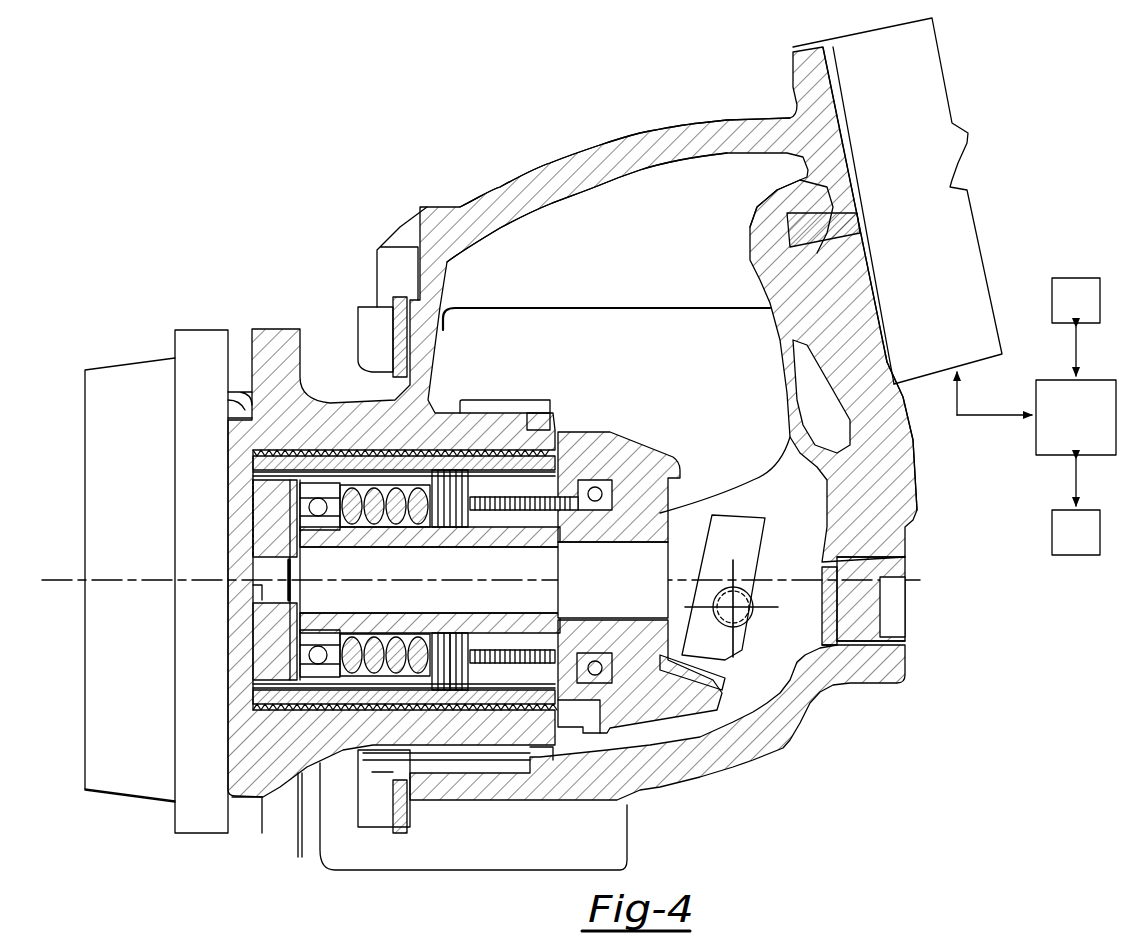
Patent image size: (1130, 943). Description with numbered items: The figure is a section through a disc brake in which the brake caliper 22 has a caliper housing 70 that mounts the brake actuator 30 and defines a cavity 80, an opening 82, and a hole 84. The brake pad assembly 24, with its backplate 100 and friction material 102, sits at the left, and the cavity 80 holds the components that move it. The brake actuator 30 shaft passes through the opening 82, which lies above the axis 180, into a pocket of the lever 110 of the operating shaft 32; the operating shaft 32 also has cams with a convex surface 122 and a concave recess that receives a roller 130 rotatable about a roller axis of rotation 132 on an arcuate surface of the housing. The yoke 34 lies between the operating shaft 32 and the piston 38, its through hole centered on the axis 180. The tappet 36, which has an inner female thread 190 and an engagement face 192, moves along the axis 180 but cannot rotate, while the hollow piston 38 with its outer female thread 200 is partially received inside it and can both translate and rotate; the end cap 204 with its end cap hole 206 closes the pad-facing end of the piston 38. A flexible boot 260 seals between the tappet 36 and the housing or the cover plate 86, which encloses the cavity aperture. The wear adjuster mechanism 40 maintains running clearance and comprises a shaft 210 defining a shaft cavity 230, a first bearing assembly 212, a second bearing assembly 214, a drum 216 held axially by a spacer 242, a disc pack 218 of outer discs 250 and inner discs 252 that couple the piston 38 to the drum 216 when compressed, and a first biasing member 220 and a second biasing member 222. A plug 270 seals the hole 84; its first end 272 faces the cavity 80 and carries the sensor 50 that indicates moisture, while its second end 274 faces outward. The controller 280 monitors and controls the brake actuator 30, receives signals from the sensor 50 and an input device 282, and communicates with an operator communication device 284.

The brake caliper 22 is at (618, 170).
The caliper housing 70 is at (608, 135).
The brake pad assembly 24 is at (142, 415).
The brake actuator 30 is at (927, 206).
The operating shaft 32 is at (838, 497).
The yoke 34 is at (648, 443).
The tappet 36 is at (270, 326).
The piston 38 is at (247, 461).
The wear adjuster mechanism 40 is at (560, 470).
The sensor 50 is at (822, 578).
The cavity 80 is at (634, 255).
The opening 82 is at (852, 297).
The hole 84 is at (895, 650).
The cover plate 86 is at (362, 310).
The backplate 100 is at (216, 745).
The friction material 102 is at (145, 745).
The lever 110 is at (750, 245).
The convex surface 122 is at (708, 480).
The roller 130 is at (760, 650).
The roller axis of rotation 132 is at (755, 607).
The axis 180 is at (74, 578).
The inner female thread 190 is at (484, 462).
The engagement face 192 is at (228, 436).
The outer female thread 200 is at (352, 450).
The end cap 204 is at (265, 510).
The end cap hole 206 is at (256, 591).
The shaft 210 is at (616, 539).
The first bearing assembly 212 is at (297, 652).
The second bearing assembly 214 is at (597, 645).
The drum 216 is at (520, 634).
The disc pack 218 is at (448, 698).
The first biasing member 220 is at (357, 662).
The second biasing member 222 is at (558, 677).
The shaft cavity 230 is at (305, 606).
The spacer 242 is at (413, 633).
The outer disc 250 is at (423, 682).
The inner disc 252 is at (453, 660).
The flexible boot 260 is at (462, 398).
The plug 270 is at (905, 612).
The first end 272 is at (905, 567).
The second end 274 is at (828, 652).
The controller 280 is at (1036, 413).
The input device 282 is at (1076, 327).
The operator communication device 284 is at (1076, 507).